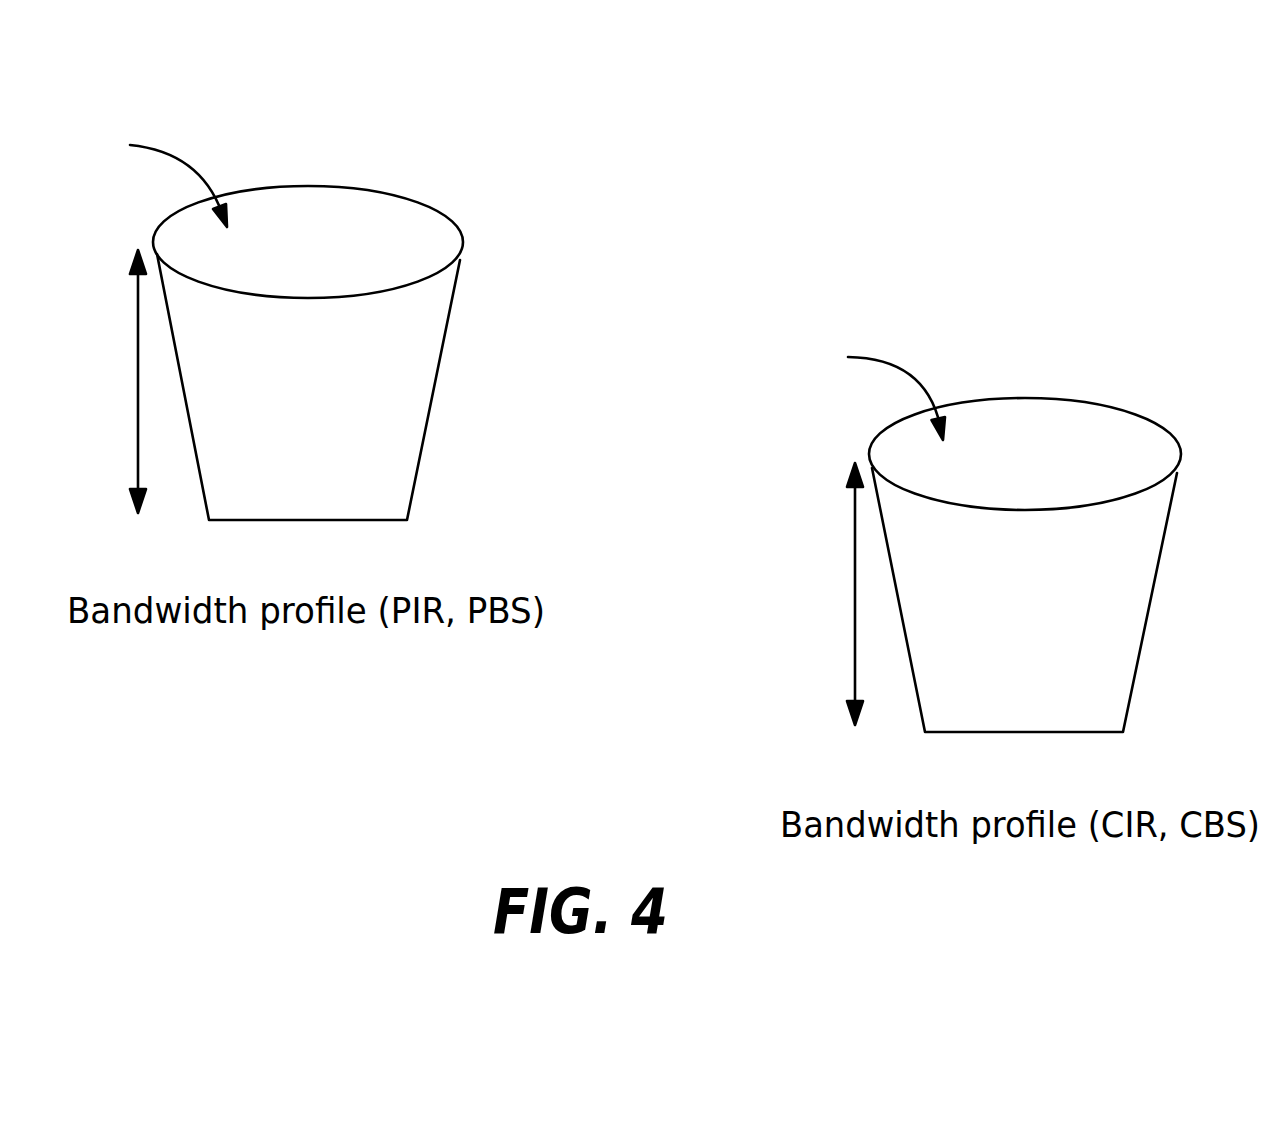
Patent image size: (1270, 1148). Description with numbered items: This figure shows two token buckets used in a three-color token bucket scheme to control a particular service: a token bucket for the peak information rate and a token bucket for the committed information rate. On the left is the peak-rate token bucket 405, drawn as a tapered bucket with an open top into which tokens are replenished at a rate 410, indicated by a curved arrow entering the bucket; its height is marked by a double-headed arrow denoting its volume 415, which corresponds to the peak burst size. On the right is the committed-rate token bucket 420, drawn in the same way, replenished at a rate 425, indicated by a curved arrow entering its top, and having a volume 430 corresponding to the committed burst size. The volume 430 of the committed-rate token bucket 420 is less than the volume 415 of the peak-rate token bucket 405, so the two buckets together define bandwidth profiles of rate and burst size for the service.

The PIR token bucket 405 is at (418, 329).
The rate 410 is at (118, 122).
The volume 415 is at (100, 381).
The CIR token bucket 420 is at (1085, 408).
The rate 425 is at (837, 333).
The volume 430 is at (816, 594).